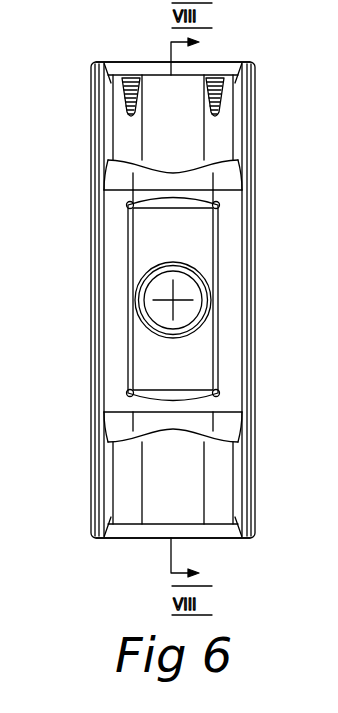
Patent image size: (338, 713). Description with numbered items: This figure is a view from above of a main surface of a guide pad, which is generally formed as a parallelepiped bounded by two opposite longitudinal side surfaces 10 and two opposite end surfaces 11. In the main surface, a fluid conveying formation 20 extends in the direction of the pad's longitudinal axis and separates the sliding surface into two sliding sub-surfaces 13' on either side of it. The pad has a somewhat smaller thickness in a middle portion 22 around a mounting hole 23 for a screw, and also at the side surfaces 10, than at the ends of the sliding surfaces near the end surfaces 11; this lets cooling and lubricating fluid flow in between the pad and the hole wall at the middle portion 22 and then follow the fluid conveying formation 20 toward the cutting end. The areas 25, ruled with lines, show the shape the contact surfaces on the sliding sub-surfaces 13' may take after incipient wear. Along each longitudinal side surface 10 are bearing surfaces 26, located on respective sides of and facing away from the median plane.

The longitudinal side surface 10 is at (91, 271).
The end surface 11 is at (128, 62).
The sliding sub-surface 13' is at (172, 302).
The fluid conveying formation 20 is at (187, 134).
The middle portion 22 is at (78, 367).
The mounting hole 23 is at (165, 312).
The contact area 25 is at (130, 90).
The bearing surface 26 is at (94, 415).